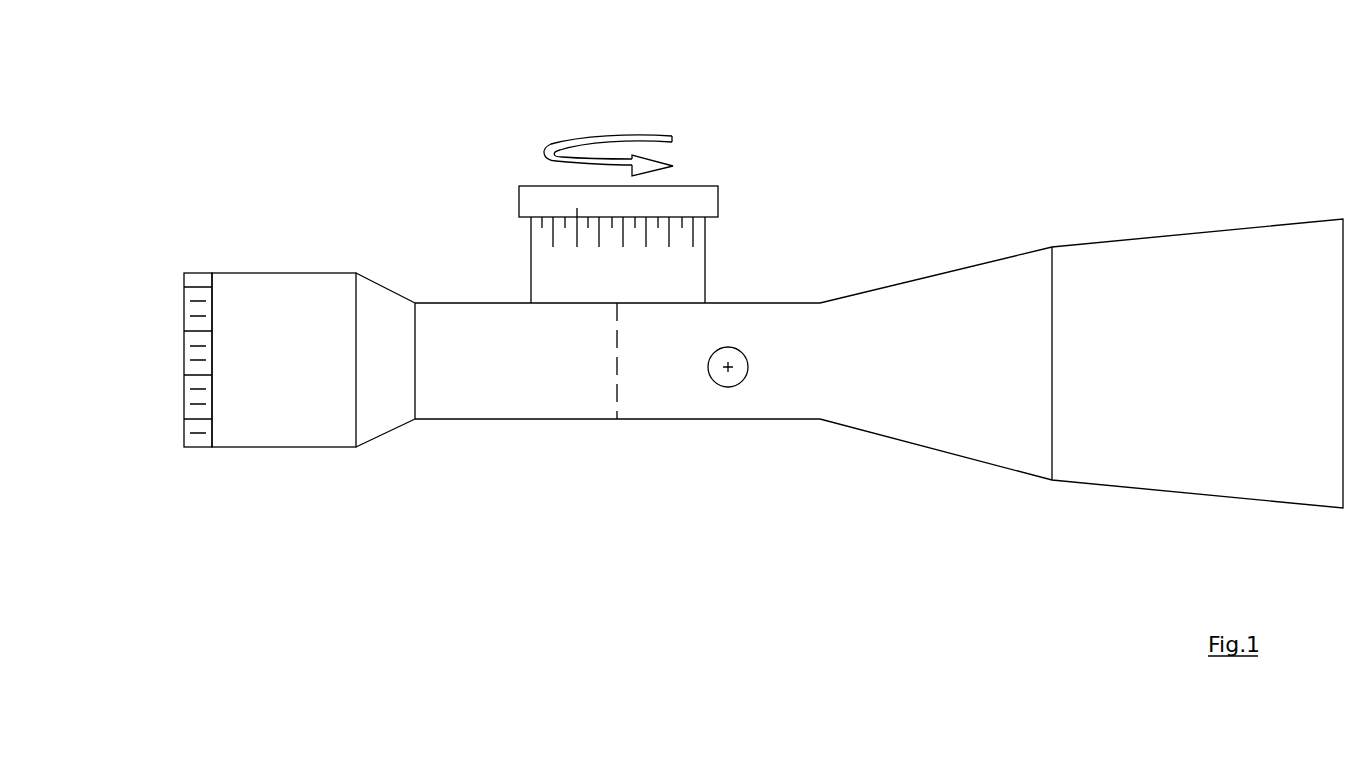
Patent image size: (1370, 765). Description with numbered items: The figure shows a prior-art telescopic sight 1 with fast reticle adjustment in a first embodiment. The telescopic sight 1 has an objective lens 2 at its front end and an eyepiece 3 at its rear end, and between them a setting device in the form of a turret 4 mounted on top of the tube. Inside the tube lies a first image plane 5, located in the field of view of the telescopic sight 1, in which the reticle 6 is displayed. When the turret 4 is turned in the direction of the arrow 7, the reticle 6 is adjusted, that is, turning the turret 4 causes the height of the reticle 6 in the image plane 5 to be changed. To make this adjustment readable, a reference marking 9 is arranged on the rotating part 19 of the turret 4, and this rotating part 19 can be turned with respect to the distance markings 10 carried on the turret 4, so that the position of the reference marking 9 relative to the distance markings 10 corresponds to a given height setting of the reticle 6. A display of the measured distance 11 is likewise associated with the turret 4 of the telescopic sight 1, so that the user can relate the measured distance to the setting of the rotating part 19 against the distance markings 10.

The telescopic sight 1 is at (376, 166).
The objective lens 2 is at (1243, 278).
The eyepiece 3 is at (286, 300).
The turret 4 is at (649, 169).
The image plane 5 is at (615, 387).
The reticle 6 is at (720, 377).
The arrow 7 is at (618, 130).
The reference marking 9 is at (577, 203).
The distance marking 10 is at (699, 235).
The display of the measured distance 11 is at (527, 197).
The rotating part 19 is at (702, 200).